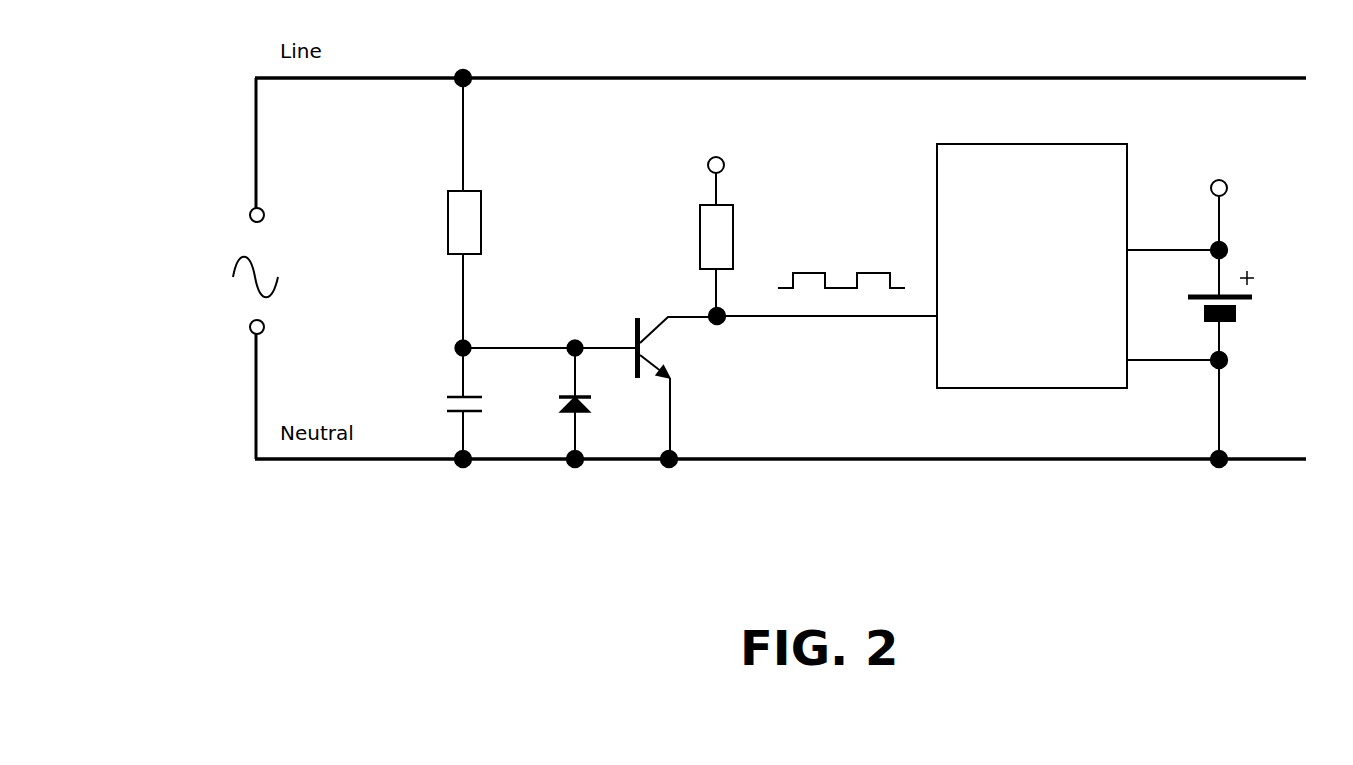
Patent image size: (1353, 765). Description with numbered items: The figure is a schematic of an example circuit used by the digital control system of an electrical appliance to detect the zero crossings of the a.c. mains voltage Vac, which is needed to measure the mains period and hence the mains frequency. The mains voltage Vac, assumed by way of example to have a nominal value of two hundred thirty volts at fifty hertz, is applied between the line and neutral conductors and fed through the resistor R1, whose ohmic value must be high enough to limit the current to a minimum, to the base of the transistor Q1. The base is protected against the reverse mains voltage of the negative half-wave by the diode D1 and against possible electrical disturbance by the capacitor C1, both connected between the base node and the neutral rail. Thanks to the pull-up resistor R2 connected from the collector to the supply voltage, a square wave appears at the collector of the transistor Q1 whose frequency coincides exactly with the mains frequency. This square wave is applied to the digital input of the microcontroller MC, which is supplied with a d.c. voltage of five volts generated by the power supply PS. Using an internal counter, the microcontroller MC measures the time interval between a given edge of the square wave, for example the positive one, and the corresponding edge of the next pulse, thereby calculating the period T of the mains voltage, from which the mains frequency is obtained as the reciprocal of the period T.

The a.c. mains voltage Vac is at (183, 268).
The resistor R1 is at (447, 209).
The capacitor C1 is at (447, 404).
The diode D1 is at (556, 404).
The transistor Q1 is at (680, 392).
The pull-up resistor R2 is at (704, 225).
The period of the mains voltage T is at (858, 242).
The microcontroller MC is at (1032, 266).
The power supply PS is at (1256, 304).